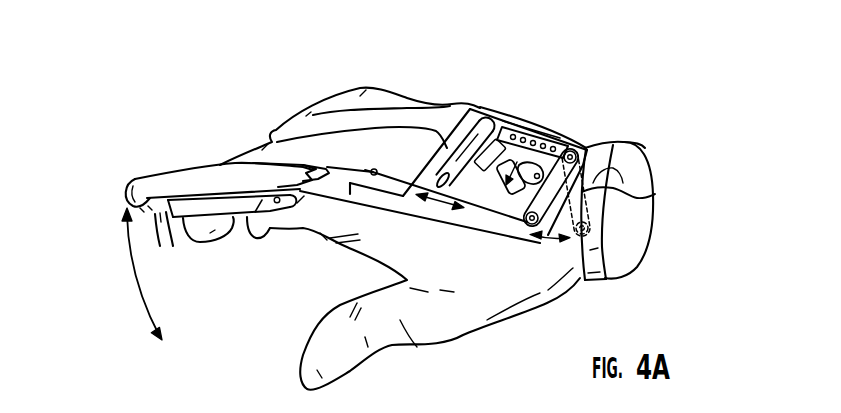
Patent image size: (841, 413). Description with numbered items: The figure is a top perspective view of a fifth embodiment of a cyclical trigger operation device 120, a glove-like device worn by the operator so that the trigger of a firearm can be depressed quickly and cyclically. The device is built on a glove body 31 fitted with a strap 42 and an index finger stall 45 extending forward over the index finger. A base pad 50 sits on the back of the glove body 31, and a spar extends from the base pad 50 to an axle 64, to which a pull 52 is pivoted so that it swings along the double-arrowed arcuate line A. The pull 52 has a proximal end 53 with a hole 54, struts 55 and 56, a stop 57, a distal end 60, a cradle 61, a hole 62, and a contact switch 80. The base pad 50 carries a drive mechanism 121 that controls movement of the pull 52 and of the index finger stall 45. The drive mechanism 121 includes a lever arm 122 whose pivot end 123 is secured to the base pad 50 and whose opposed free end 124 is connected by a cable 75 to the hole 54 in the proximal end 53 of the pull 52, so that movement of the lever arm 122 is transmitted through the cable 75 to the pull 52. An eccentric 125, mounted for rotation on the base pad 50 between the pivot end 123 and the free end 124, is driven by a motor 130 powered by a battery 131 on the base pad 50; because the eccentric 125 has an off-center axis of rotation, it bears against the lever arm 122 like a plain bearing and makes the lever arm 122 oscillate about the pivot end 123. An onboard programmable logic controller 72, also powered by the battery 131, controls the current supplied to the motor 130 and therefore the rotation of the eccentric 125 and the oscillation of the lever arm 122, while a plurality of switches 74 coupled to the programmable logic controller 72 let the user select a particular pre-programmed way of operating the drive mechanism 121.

The cyclical trigger operation device 120 is at (90, 41).
The glove body 31 is at (495, 326).
The strap 42 is at (593, 282).
The lever arm 122 is at (655, 194).
The index finger stall 45 is at (135, 180).
The distal end 60 is at (125, 187).
The cradle 61 is at (150, 213).
The hole 62 is at (152, 213).
The contact switch 80 is at (202, 259).
The double-arrowed arcuate line A is at (143, 322).
The axle 64 is at (280, 180).
The strut 55 is at (283, 165).
The pull 52 is at (317, 166).
The proximal end 53 is at (419, 140).
The hole 54 is at (437, 157).
The programmable logic controller 72 is at (473, 195).
The cable 75 is at (378, 175).
The base pad 50 is at (506, 54).
The drive mechanism 121 is at (502, 118).
The battery 131 is at (455, 140).
The switches 74 is at (550, 140).
The eccentric 125 is at (530, 166).
The motor 130 is at (494, 196).
The pivot end 123 is at (577, 152).
The free end 124 is at (528, 229).
The strut 56 is at (262, 195).
The stop 57 is at (297, 202).